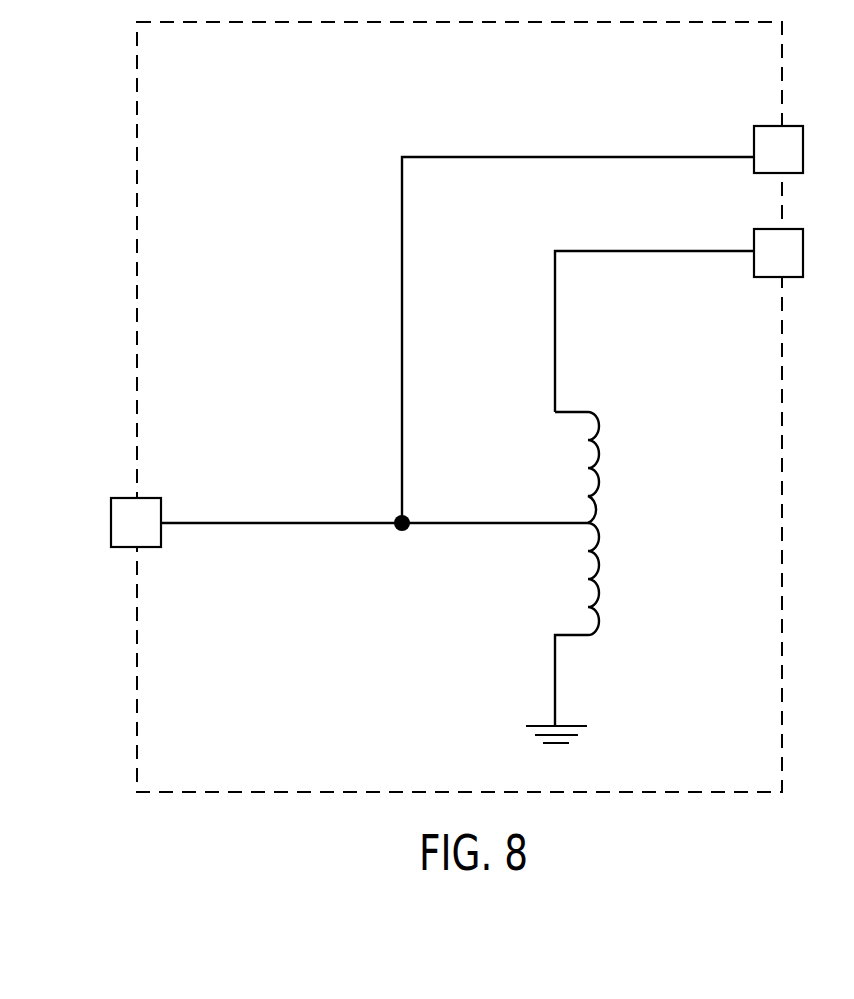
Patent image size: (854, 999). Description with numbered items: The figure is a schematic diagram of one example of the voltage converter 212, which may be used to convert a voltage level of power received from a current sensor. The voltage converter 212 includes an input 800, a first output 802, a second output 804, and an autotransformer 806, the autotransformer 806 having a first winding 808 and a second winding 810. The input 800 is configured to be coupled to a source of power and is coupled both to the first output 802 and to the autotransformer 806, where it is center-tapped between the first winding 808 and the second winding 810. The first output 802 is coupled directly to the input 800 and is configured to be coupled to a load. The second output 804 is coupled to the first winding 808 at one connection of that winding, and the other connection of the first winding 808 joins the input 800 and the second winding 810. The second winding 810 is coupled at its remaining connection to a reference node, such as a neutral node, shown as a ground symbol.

The voltage converter 212 is at (137, 172).
The input 800 is at (111, 522).
The first output 802 is at (754, 143).
The second output 804 is at (754, 244).
The autotransformer 806 is at (625, 569).
The first winding 808 is at (588, 468).
The second winding 810 is at (588, 607).